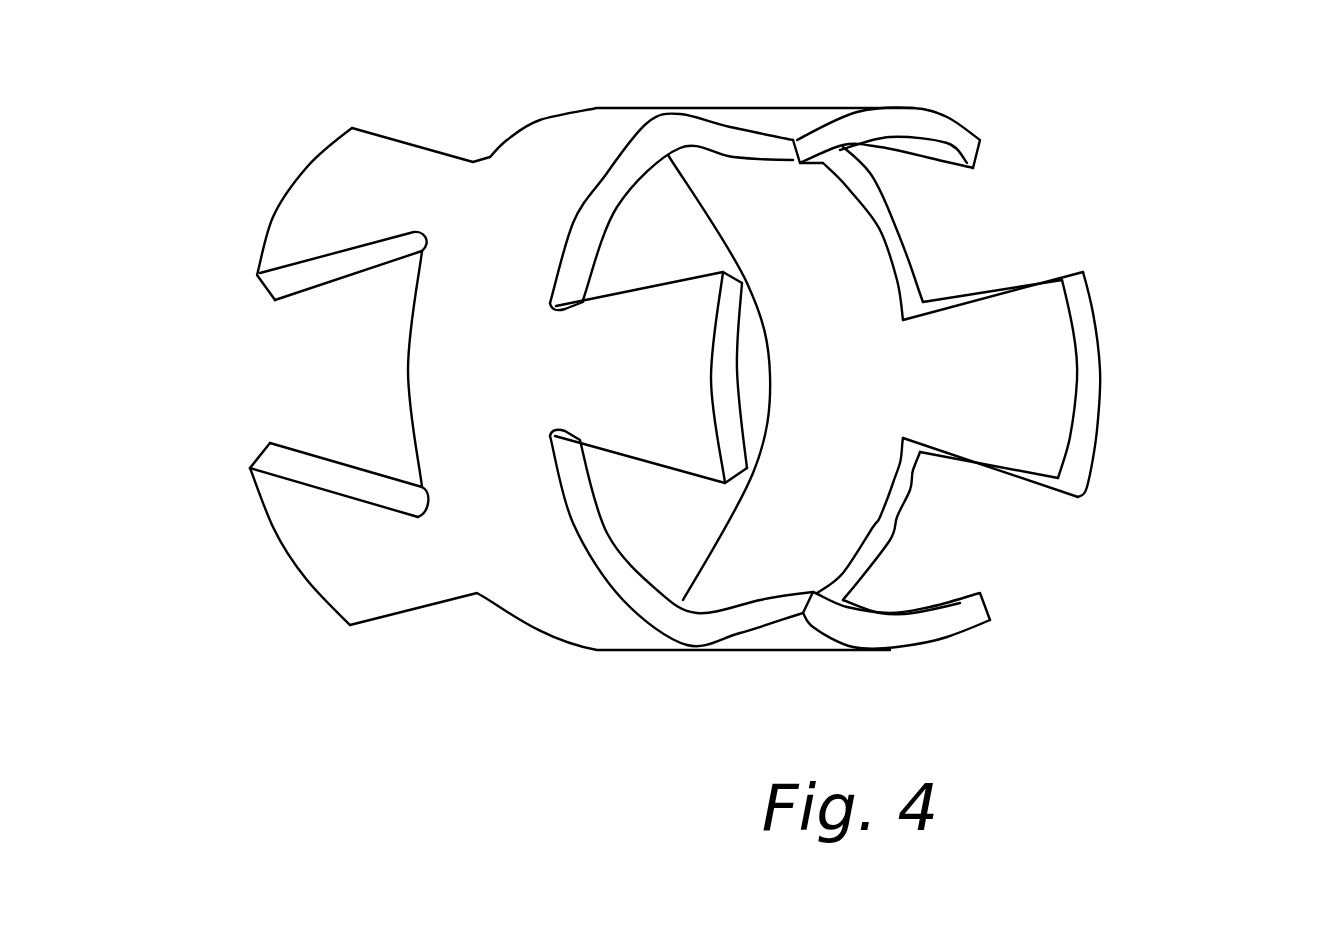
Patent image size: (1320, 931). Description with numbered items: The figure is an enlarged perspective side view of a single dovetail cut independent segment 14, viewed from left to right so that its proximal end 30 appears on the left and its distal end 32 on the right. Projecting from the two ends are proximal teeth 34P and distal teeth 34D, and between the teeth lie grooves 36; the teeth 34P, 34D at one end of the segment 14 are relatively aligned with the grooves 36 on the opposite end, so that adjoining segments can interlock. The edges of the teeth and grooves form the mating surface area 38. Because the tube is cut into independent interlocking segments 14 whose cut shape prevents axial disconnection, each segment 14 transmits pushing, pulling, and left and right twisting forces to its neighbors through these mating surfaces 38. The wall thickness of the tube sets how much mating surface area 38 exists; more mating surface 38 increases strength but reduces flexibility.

The segment 14 is at (465, 397).
The proximal end 30 is at (173, 412).
The distal end 32 is at (1170, 456).
The proximal teeth 34P is at (335, 205).
The distal teeth 34D is at (788, 123).
The grooves 36 is at (357, 300).
The mating surface area 38 is at (290, 278).